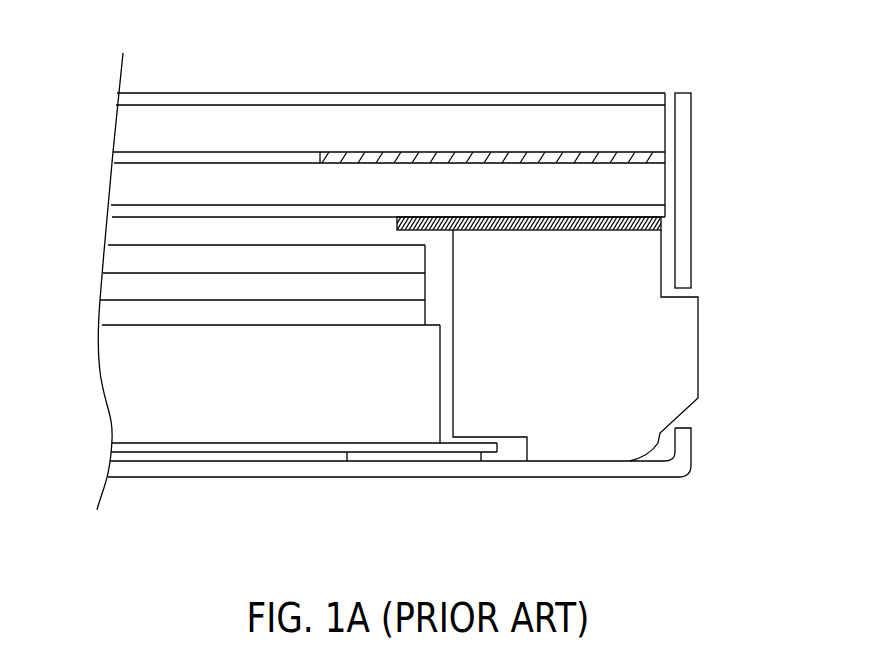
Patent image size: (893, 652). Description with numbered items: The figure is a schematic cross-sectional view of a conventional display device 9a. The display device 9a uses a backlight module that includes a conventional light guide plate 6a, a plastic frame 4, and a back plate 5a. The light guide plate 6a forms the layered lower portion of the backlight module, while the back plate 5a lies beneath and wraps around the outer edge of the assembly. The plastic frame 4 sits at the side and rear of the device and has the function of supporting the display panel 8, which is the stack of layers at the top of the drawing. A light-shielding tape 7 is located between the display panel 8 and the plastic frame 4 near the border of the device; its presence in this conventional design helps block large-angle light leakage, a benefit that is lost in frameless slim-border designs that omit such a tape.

The display device 9a is at (156, 32).
The display panel 8 is at (102, 92).
The light-shielding tape 7 is at (642, 217).
The plastic frame 4 is at (647, 347).
The back plate 5a is at (683, 441).
The light guide plate 6a is at (128, 360).